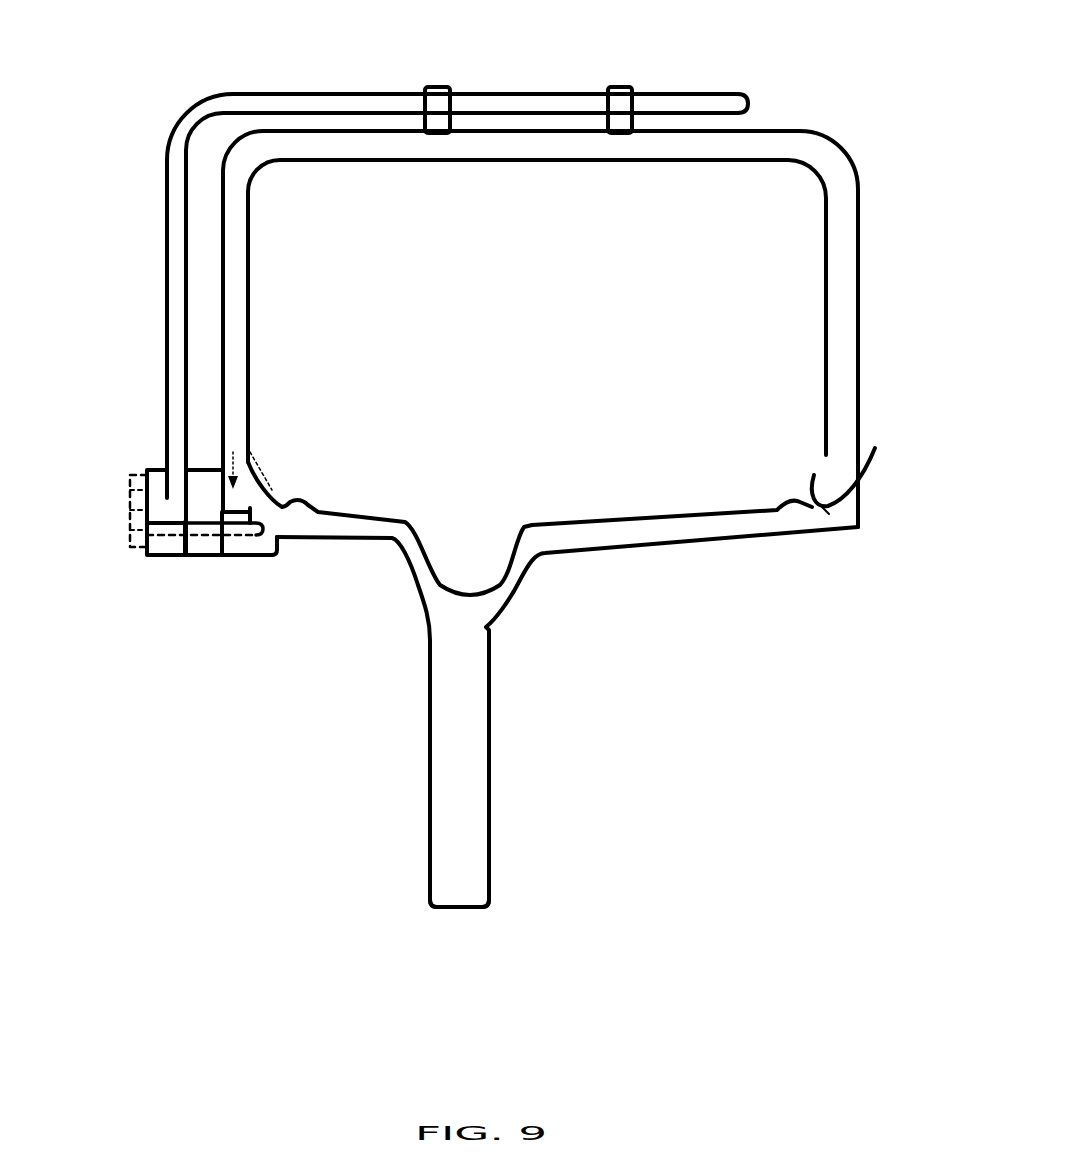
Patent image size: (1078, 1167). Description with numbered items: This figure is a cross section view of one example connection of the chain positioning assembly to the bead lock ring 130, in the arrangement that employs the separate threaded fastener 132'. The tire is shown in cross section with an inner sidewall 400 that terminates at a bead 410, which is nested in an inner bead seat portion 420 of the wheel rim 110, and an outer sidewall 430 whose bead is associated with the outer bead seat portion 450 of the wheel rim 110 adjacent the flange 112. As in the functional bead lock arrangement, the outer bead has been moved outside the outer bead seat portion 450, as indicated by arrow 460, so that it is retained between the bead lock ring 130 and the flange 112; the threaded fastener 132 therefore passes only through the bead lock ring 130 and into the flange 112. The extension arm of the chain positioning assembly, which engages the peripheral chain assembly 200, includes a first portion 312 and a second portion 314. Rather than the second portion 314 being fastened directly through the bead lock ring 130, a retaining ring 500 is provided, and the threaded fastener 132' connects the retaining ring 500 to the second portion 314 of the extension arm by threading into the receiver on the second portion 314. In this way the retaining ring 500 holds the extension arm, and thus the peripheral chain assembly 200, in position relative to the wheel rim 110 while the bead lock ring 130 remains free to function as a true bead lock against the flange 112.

The wheel rim 110 is at (483, 782).
The flange 112 is at (250, 557).
The bead lock ring 130 is at (203, 556).
The threaded fastener 132 is at (152, 552).
The threaded fastener 132' is at (92, 501).
The peripheral chain assembly 200 is at (433, 87).
The first portion 312 is at (502, 103).
The second portion 314 is at (172, 272).
The inner sidewall 400 is at (588, 519).
The bead 410 is at (825, 475).
The inner bead seat portion 420 is at (820, 505).
The outer sidewall 430 is at (242, 328).
The outer bead seat portion 450 is at (286, 502).
The arrow 460 is at (272, 490).
The retaining ring 500 is at (172, 556).